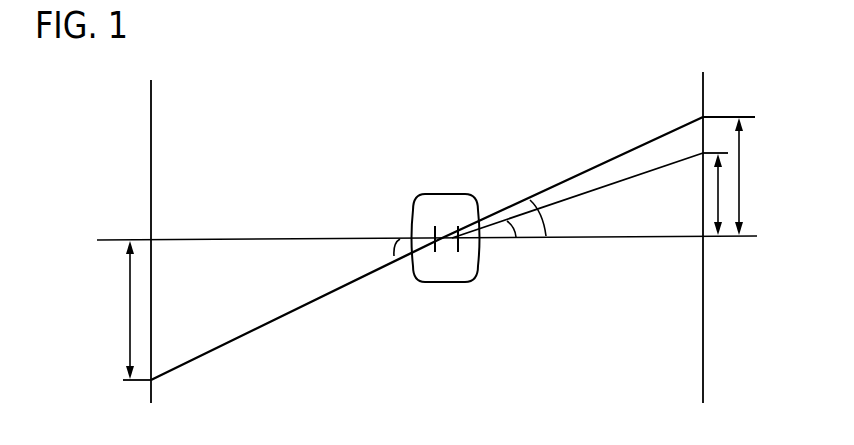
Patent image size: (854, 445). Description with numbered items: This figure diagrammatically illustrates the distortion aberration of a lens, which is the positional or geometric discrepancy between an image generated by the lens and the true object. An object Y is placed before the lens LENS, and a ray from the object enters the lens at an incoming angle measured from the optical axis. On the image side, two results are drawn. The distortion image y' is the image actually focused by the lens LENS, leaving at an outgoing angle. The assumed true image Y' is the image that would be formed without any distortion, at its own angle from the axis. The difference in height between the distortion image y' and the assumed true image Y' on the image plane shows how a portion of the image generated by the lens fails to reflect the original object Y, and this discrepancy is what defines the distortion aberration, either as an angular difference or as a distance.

The lens LENS is at (450, 216).
The object Y is at (117, 310).
The assumed true image Y' is at (763, 176).
The distortion image y' is at (745, 194).